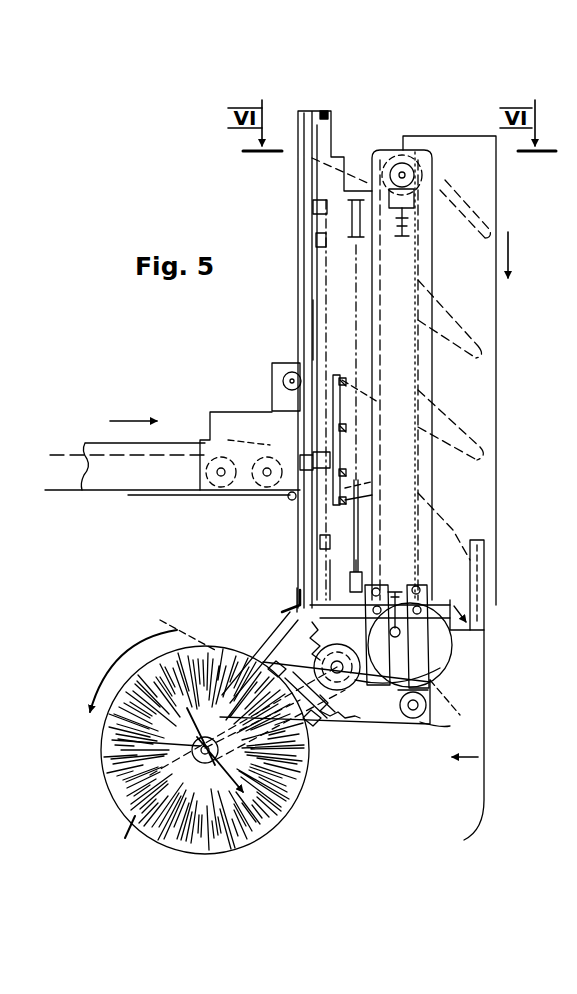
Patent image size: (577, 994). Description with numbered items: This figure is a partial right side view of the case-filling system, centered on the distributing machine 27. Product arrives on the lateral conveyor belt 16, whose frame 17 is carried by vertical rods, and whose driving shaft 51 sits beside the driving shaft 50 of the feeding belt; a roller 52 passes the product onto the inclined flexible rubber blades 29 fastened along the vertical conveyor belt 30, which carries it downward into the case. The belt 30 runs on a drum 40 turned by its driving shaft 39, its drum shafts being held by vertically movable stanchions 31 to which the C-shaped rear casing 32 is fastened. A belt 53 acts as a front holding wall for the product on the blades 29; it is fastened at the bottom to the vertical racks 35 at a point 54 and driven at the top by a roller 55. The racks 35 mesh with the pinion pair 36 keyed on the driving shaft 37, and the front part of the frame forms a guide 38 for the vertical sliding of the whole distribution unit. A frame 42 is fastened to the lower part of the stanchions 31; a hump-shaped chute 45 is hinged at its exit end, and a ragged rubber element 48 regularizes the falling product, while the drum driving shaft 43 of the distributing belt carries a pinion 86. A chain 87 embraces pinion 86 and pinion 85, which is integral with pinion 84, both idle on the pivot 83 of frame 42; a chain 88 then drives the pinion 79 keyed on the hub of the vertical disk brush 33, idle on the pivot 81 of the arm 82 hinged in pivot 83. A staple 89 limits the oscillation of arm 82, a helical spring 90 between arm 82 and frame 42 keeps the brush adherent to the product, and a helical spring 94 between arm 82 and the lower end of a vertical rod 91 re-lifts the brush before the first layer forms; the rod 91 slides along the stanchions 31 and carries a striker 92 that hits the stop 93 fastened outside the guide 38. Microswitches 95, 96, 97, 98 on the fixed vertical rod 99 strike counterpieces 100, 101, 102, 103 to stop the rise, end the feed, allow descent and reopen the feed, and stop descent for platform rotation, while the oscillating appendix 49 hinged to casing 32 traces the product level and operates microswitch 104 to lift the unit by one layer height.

The lateral conveyor belt 16 is at (58, 492).
The frame 17 is at (82, 450).
The distributing machine 27 is at (500, 446).
The inclined flexible rubber blades 29 is at (470, 205).
The vertical conveyor belt 30 is at (496, 358).
The vertically movable stanchions 31 is at (373, 152).
The rear casing 32 is at (496, 503).
The vertical disk brush 33 is at (130, 680).
The vertical racks 35 is at (299, 120).
The pinion pair 36 is at (283, 364).
The driving shaft 37 is at (284, 375).
The guide 38 is at (307, 368).
The driving shaft of the drum 39 is at (408, 168).
The drum 40 is at (415, 152).
The frame 42 is at (432, 650).
The drum driving shaft 43 is at (415, 722).
The chute 45 is at (125, 836).
The ragged rubber element 48 is at (112, 758).
The oscillating lower appendix 49 is at (486, 640).
The driving shaft of belt 13 50 is at (222, 480).
The driving shaft of belt 16 51 is at (262, 462).
The roller 52 is at (263, 458).
The belt 53 is at (318, 578).
The fastening point 54 is at (300, 590).
The roller 55 is at (290, 498).
The pinion 79 is at (112, 734).
The pivot 81 is at (245, 836).
The arm 82 is at (210, 645).
The pivot 83 is at (340, 690).
The pinion 84 is at (440, 670).
The pinion 85 is at (400, 725).
The pinion 86 is at (440, 725).
The chain 87 is at (460, 705).
The chain 88 is at (285, 806).
The staple 89 is at (315, 738).
The helical spring 90 is at (345, 736).
The vertical rod 91 is at (316, 300).
The striker 92 is at (313, 208).
The stop 93 is at (300, 458).
The helical spring 94 is at (280, 628).
The microswitch 95 is at (420, 512).
The microswitch 96 is at (360, 478).
The microswitch 97 is at (378, 416).
The microswitch 98 is at (342, 380).
The fixed vertical rod 99 is at (412, 470).
The counterpiece 100 is at (305, 566).
The counterpiece 101 is at (320, 540).
The counterpiece 102 is at (352, 240).
The counterpiece 103 is at (329, 117).
The microswitch 104 is at (462, 602).